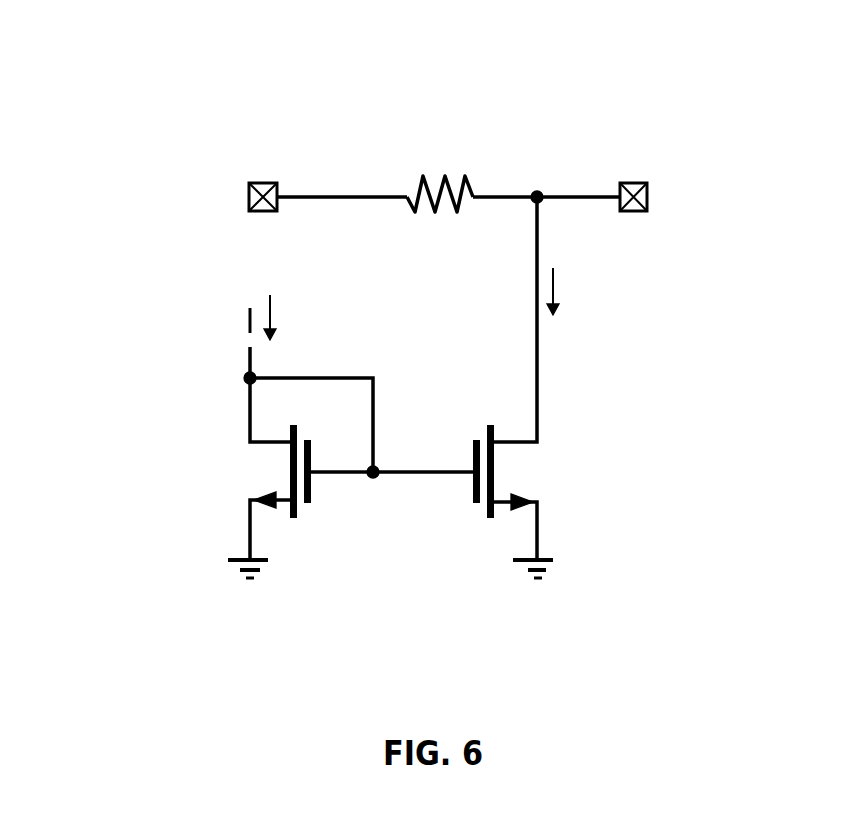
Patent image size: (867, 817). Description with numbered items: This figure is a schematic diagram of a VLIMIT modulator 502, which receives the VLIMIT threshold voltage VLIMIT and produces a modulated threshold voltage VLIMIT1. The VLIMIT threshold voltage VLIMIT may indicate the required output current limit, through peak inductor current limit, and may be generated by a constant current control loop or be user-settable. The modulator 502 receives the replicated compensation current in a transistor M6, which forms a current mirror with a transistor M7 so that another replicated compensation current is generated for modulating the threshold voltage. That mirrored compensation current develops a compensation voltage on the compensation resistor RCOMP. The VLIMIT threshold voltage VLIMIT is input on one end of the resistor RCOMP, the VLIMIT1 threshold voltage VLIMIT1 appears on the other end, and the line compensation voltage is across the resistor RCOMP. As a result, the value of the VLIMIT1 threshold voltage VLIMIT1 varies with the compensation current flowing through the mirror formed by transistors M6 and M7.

The VLIMIT modulator 502 is at (98, 101).
The transistor M6 is at (258, 501).
The transistor M7 is at (528, 501).
The compensation resistor RCOMP is at (434, 169).
The VLIMIT threshold voltage VLIMIT is at (208, 198).
The VLIMIT1 threshold voltage VLIMIT1 is at (691, 198).